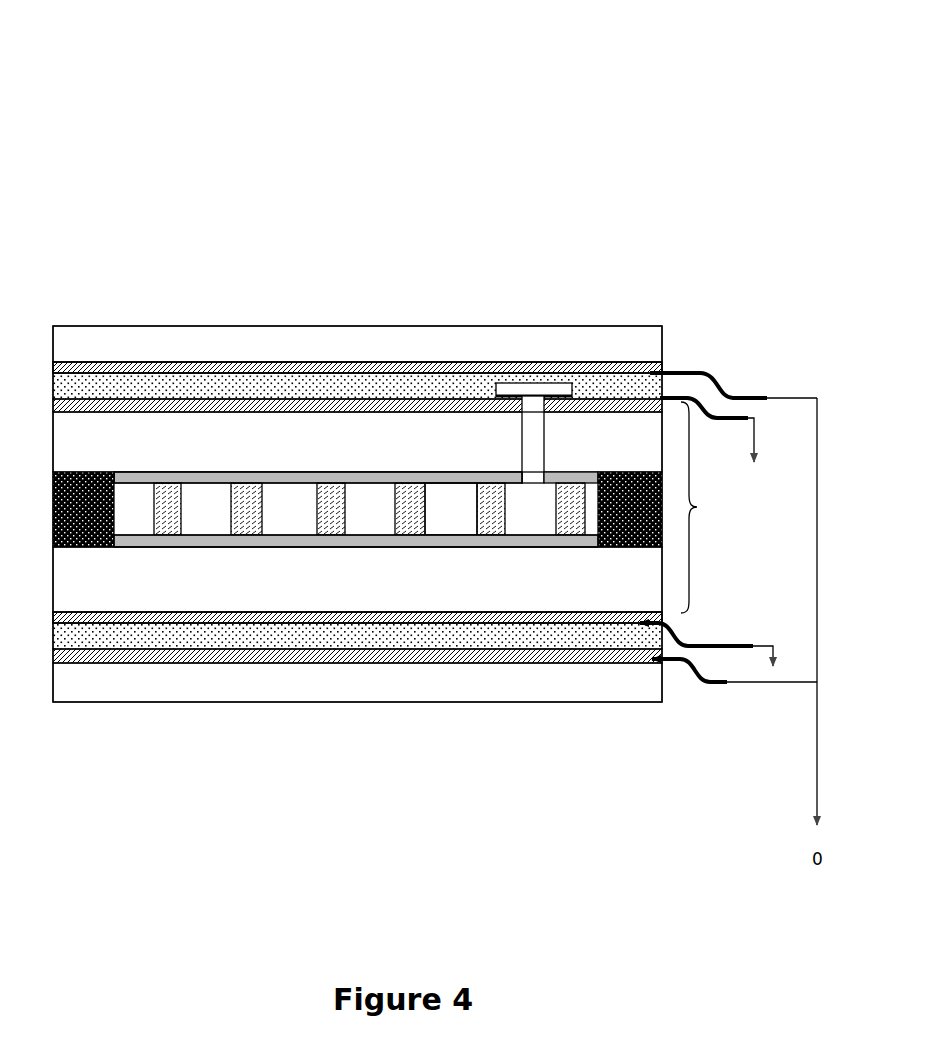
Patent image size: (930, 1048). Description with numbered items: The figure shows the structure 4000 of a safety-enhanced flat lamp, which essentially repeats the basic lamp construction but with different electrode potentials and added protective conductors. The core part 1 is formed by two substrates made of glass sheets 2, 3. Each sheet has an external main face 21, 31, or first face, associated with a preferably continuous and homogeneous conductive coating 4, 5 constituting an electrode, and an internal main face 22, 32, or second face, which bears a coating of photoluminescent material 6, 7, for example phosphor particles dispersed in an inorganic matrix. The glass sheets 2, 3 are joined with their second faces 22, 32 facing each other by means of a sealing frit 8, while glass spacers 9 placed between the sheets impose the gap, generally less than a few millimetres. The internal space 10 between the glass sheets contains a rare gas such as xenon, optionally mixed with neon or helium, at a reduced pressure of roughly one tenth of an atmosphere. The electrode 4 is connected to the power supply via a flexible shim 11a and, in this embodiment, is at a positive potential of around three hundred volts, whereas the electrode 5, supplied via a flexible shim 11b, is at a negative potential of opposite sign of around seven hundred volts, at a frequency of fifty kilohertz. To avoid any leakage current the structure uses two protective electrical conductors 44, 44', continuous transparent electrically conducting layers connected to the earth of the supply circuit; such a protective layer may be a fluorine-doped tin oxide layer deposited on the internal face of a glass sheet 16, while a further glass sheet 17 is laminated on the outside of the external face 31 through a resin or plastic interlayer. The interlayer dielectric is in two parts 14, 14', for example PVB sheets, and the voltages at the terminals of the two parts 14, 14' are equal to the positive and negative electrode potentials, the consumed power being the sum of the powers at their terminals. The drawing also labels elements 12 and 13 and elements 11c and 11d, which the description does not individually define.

The structure of the lamp 4000 is at (509, 90).
The glass sheet 16 is at (165, 352).
The electrode 4 is at (617, 364).
The protective electrical conductor 44 is at (365, 291).
The interlayer dielectric part 14 is at (352, 336).
The external main face 21 is at (103, 400).
The contact pad 13 is at (518, 383).
The conductive via 12 is at (538, 423).
The glass sheet 2 is at (77, 447).
The coating of photoluminescent material 6 is at (255, 478).
The internal main face 22 is at (380, 479).
The sealing frit 8 is at (52, 533).
The glass spacers 9 is at (330, 520).
The internal space 10 is at (457, 522).
The coating of photoluminescent material 7 is at (250, 548).
The internal main face 32 is at (368, 535).
The glass sheet 3 is at (65, 587).
The external main face 31 is at (595, 614).
The electrode 5 is at (490, 615).
The interlayer dielectric part 14' is at (357, 695).
The protective electrical conductor 44' is at (357, 728).
The glass sheet 17 is at (158, 685).
The wire to upper electrode 11c is at (723, 385).
The flexible shim 11a is at (732, 422).
The flexible shim 11b is at (708, 635).
The wire to lower electrode 11d is at (710, 682).
The part 1 is at (698, 507).